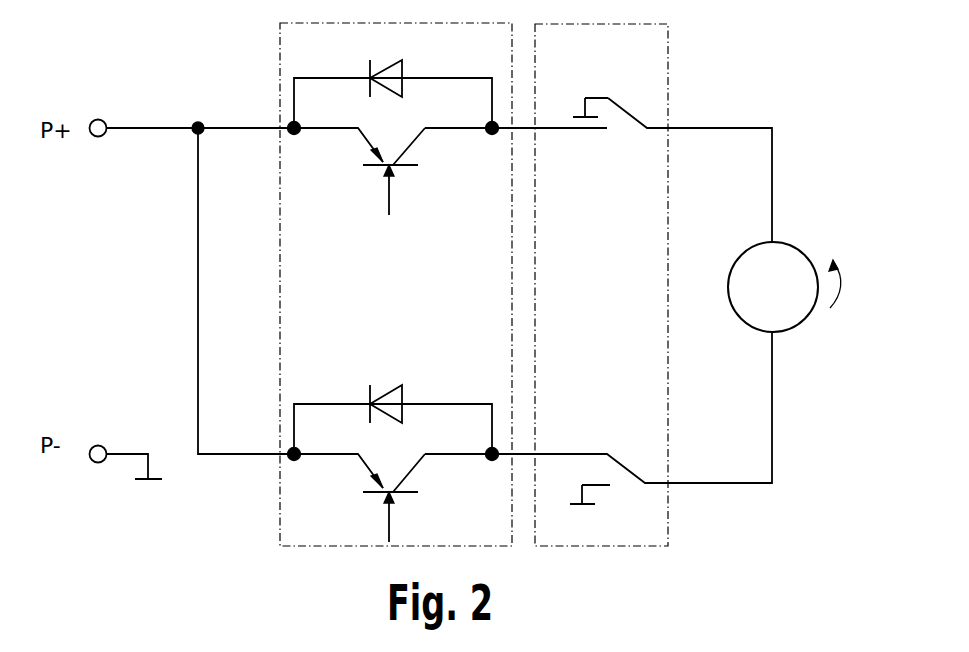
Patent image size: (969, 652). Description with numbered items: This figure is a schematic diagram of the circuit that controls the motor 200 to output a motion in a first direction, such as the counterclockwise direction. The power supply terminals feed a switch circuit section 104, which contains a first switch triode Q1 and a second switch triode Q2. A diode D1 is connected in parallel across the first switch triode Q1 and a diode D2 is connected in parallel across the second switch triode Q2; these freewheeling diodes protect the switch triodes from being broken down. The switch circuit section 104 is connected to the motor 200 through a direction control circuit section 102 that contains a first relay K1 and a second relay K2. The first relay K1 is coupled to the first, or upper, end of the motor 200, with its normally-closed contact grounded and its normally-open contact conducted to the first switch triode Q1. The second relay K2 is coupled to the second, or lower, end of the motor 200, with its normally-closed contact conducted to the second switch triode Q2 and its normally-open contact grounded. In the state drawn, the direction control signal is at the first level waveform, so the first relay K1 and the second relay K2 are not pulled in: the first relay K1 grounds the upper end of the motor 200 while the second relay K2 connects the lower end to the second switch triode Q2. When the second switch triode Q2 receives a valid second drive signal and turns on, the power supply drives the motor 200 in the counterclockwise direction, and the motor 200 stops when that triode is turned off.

The switch circuit section 104 is at (346, 284).
The direction control circuit section 102 is at (632, 285).
The motor 200 is at (788, 243).
The diode D1 is at (393, 78).
The diode D2 is at (393, 403).
The first switch triode Q1 is at (393, 171).
The second switch triode Q2 is at (393, 498).
The first relay K1 is at (632, 146).
The second relay K2 is at (632, 418).